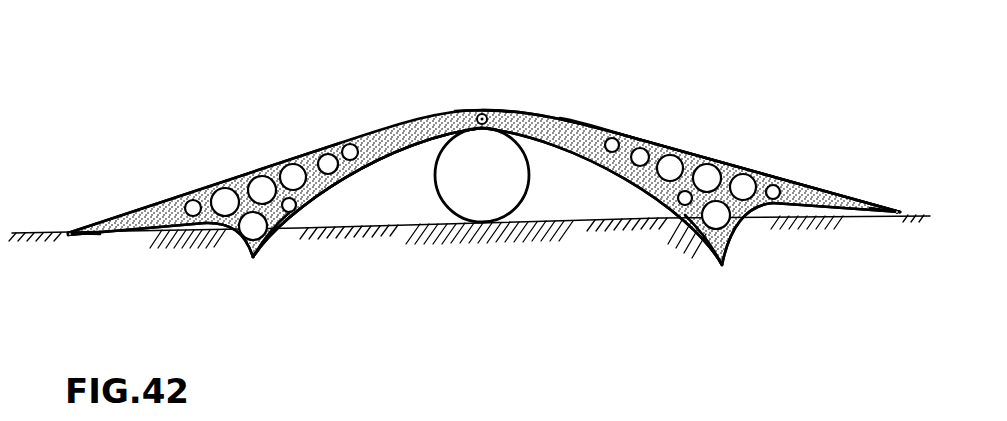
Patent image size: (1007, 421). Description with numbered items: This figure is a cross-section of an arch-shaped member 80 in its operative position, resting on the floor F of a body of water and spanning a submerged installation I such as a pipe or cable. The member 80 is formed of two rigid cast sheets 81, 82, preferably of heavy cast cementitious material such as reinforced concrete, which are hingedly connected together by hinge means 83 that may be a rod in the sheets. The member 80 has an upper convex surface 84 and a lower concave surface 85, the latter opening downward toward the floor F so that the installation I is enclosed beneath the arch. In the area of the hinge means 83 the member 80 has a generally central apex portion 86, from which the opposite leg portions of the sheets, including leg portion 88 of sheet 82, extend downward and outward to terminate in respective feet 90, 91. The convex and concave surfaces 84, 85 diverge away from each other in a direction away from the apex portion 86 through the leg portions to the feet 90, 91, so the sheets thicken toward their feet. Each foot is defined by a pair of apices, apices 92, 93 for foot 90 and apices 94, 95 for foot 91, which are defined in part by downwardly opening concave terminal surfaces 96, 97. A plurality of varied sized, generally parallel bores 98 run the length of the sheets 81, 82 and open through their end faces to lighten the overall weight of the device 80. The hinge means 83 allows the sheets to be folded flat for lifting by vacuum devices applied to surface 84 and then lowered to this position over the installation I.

The member 80 is at (348, 82).
The cast sheet 81 is at (322, 198).
The cast sheet 82 is at (697, 152).
The hinge means 83 is at (485, 113).
The upper convex surface 84 is at (605, 127).
The lower concave surface 85 is at (393, 150).
The apex portion 86 is at (475, 105).
The leg portion 88 is at (730, 165).
The foot 90 is at (157, 202).
The foot 91 is at (822, 180).
The apex 92 is at (90, 238).
The apex 93 is at (250, 263).
The apex 94 is at (887, 207).
The apex 95 is at (703, 260).
The concave terminal surface 96 is at (192, 237).
The concave terminal surface 97 is at (780, 213).
The bores 98 is at (668, 155).
The submerged installation I is at (524, 172).
The floor F is at (533, 218).